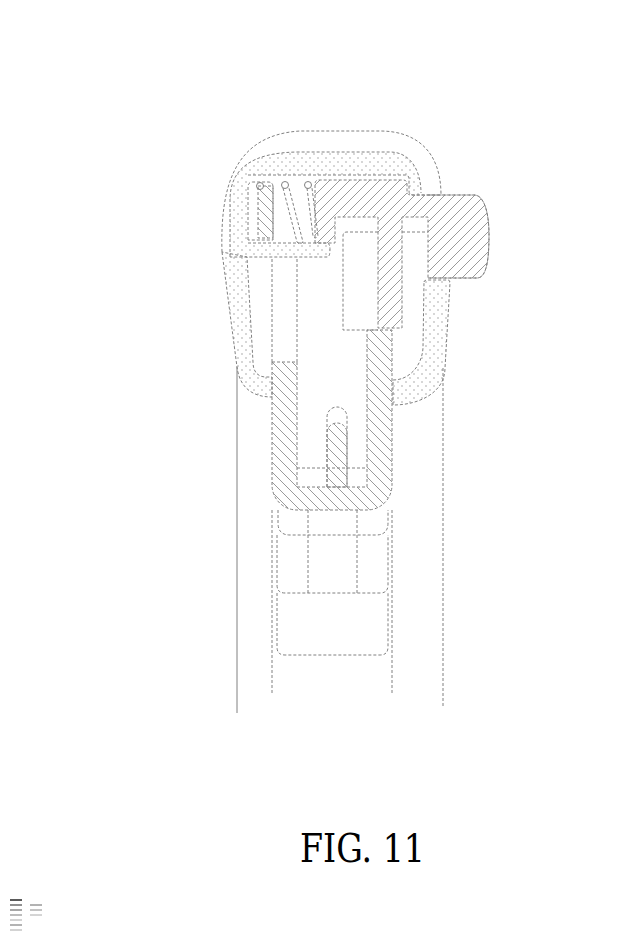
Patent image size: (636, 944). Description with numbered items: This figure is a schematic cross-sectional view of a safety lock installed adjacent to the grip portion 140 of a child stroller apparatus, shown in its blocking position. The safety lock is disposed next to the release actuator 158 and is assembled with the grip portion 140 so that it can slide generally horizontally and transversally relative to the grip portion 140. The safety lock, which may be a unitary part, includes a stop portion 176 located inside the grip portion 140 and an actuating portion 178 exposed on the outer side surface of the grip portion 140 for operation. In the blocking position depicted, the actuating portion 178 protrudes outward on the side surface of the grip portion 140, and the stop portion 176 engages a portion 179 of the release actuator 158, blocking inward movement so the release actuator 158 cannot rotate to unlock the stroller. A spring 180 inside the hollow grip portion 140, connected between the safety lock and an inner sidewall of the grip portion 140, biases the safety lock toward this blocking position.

The grip portion 140 is at (360, 131).
The release actuator 158 is at (297, 414).
The stop portion 176 is at (343, 310).
The actuating portion 178 is at (490, 243).
The portion of the release actuator 179 is at (423, 349).
The spring 180 is at (294, 182).